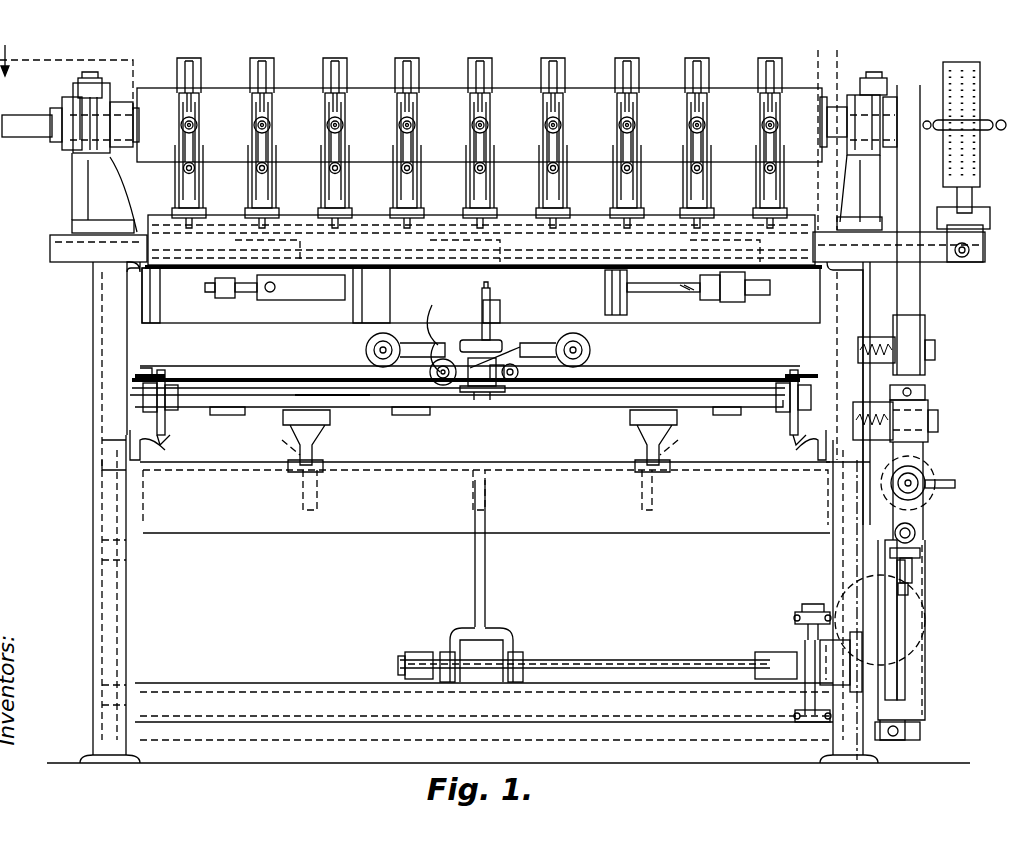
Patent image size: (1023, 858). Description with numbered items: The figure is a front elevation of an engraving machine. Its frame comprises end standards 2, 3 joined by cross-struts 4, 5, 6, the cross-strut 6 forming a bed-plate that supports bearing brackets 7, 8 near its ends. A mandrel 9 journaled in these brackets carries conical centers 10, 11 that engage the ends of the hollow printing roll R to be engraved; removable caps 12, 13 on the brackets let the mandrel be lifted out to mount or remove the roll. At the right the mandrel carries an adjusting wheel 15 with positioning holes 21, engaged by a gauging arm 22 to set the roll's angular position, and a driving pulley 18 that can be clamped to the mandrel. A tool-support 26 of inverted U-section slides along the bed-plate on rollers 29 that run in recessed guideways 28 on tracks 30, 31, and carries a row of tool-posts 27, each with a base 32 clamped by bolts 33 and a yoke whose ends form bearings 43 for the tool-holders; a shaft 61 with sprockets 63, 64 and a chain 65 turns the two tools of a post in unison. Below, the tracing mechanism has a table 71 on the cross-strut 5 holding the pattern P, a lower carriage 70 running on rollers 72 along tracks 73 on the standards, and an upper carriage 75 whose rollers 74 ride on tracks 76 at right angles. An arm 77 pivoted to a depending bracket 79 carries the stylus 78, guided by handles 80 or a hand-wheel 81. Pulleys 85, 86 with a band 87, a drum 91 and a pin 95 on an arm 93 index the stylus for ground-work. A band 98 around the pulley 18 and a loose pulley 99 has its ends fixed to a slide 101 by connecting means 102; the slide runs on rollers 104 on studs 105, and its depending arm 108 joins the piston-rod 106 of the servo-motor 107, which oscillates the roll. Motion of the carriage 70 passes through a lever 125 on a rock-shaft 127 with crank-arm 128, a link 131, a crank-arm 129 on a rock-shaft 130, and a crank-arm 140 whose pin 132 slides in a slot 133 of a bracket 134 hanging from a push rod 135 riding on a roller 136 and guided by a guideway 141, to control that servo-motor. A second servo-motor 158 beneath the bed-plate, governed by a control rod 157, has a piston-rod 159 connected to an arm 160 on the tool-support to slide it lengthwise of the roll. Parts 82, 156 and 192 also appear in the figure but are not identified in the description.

The end standard 2 is at (108, 388).
The end standard 3 is at (845, 503).
The cross-strut 4 is at (360, 725).
The cross-strut 5 is at (835, 36).
The cross-strut (bed-plate) 6 is at (92, 262).
The bearing bracket 7 is at (78, 192).
The bearing bracket 8 is at (876, 225).
The mandrel 9 is at (45, 128).
The conical center 10 is at (138, 128).
The conical center 11 is at (818, 128).
The removable cap 12 is at (72, 86).
The removable cap 13 is at (882, 90).
The adjusting wheel 15 is at (963, 62).
The driving pulley 18 is at (868, 170).
The positioning holes 21 is at (985, 116).
The gauging arm 22 is at (968, 186).
The tool-support 26 is at (553, 270).
The tool-post 27 is at (322, 183).
The recessed guideway 28 is at (345, 303).
The roller 29 is at (318, 272).
The track 30 is at (240, 243).
The track 31 is at (222, 276).
The base 32 is at (404, 184).
The bolt 33 is at (474, 200).
The bearing 43 is at (545, 122).
The shaft 61 is at (256, 172).
The sprocket 63 is at (548, 158).
The sprocket 64 is at (618, 133).
The chain 65 is at (470, 133).
The carriage 70 is at (727, 386).
The table 71 is at (398, 400).
The roller 72 is at (165, 412).
The track 73 is at (163, 432).
The roller 74 is at (368, 350).
The second carriage 75 is at (538, 352).
The track 76 is at (688, 372).
The arm 77 is at (498, 400).
The stylus 78 is at (490, 410).
The depending bracket 79 is at (504, 362).
The handle 80 is at (440, 388).
The hand-wheel 81 is at (468, 348).
The vertical stem 82 is at (490, 296).
The pulley 85 is at (163, 372).
The pulley 86 is at (793, 372).
The belt or wire band 87 is at (254, 378).
The drum 91 is at (432, 395).
The arm 93 is at (423, 344).
The pin 95 is at (437, 315).
The belt or band 98 is at (915, 283).
The loose pulley 99 is at (926, 322).
The slide 101 is at (930, 400).
The adjustable connecting means 102 is at (920, 393).
The roller 104 is at (925, 432).
The stud 105 is at (938, 418).
The piston-rod 106 is at (920, 485).
The power means (servo-motor) 107 is at (915, 495).
The depending arm 108 is at (918, 470).
The lever 125 is at (486, 562).
The rock-shaft 127 is at (590, 663).
The crank-arm 128 is at (808, 610).
The crank-arm 129 is at (798, 702).
The rock-shaft 130 is at (905, 616).
The link 131 is at (805, 641).
The pin 132 is at (912, 572).
The slot 133 is at (915, 596).
The bracket 134 is at (925, 668).
The push rod 135 is at (915, 532).
The roller 136 is at (920, 553).
The crank-arm 140 is at (898, 636).
The guideway 141 is at (905, 740).
The nut 156 is at (225, 297).
The control rod 157 is at (250, 298).
The servo-motor 158 is at (519, 308).
The piston-rod 159 is at (683, 293).
The arm 160 is at (740, 300).
The hammer fork 192 is at (268, 62).
The pattern P is at (378, 400).
The printing roll (work-piece) R is at (450, 102).